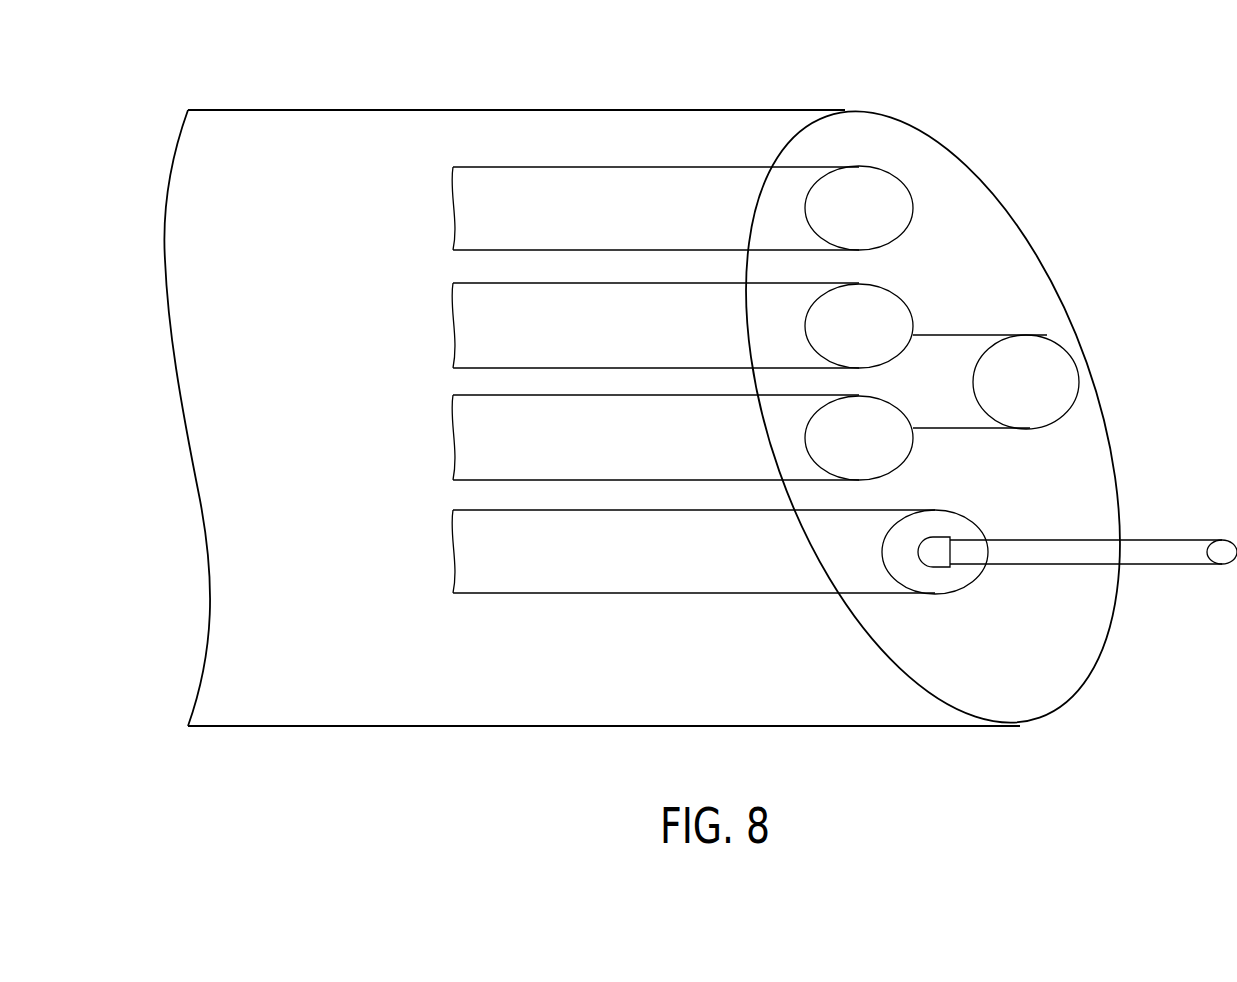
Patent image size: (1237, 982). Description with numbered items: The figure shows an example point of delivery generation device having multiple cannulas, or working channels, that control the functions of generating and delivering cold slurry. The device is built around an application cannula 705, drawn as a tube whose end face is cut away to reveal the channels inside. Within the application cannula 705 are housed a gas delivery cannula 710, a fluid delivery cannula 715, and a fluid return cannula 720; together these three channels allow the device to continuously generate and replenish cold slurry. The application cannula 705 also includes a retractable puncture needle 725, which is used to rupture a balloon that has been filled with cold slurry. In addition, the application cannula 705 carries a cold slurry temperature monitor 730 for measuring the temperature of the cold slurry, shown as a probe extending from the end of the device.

The application cannula 705 is at (537, 108).
The gas delivery cannula 710 is at (883, 167).
The fluid delivery cannula 715 is at (905, 295).
The fluid return cannula 720 is at (907, 412).
The retractable puncture needle 725 is at (1047, 335).
The cold slurry temperature monitor 730 is at (970, 520).